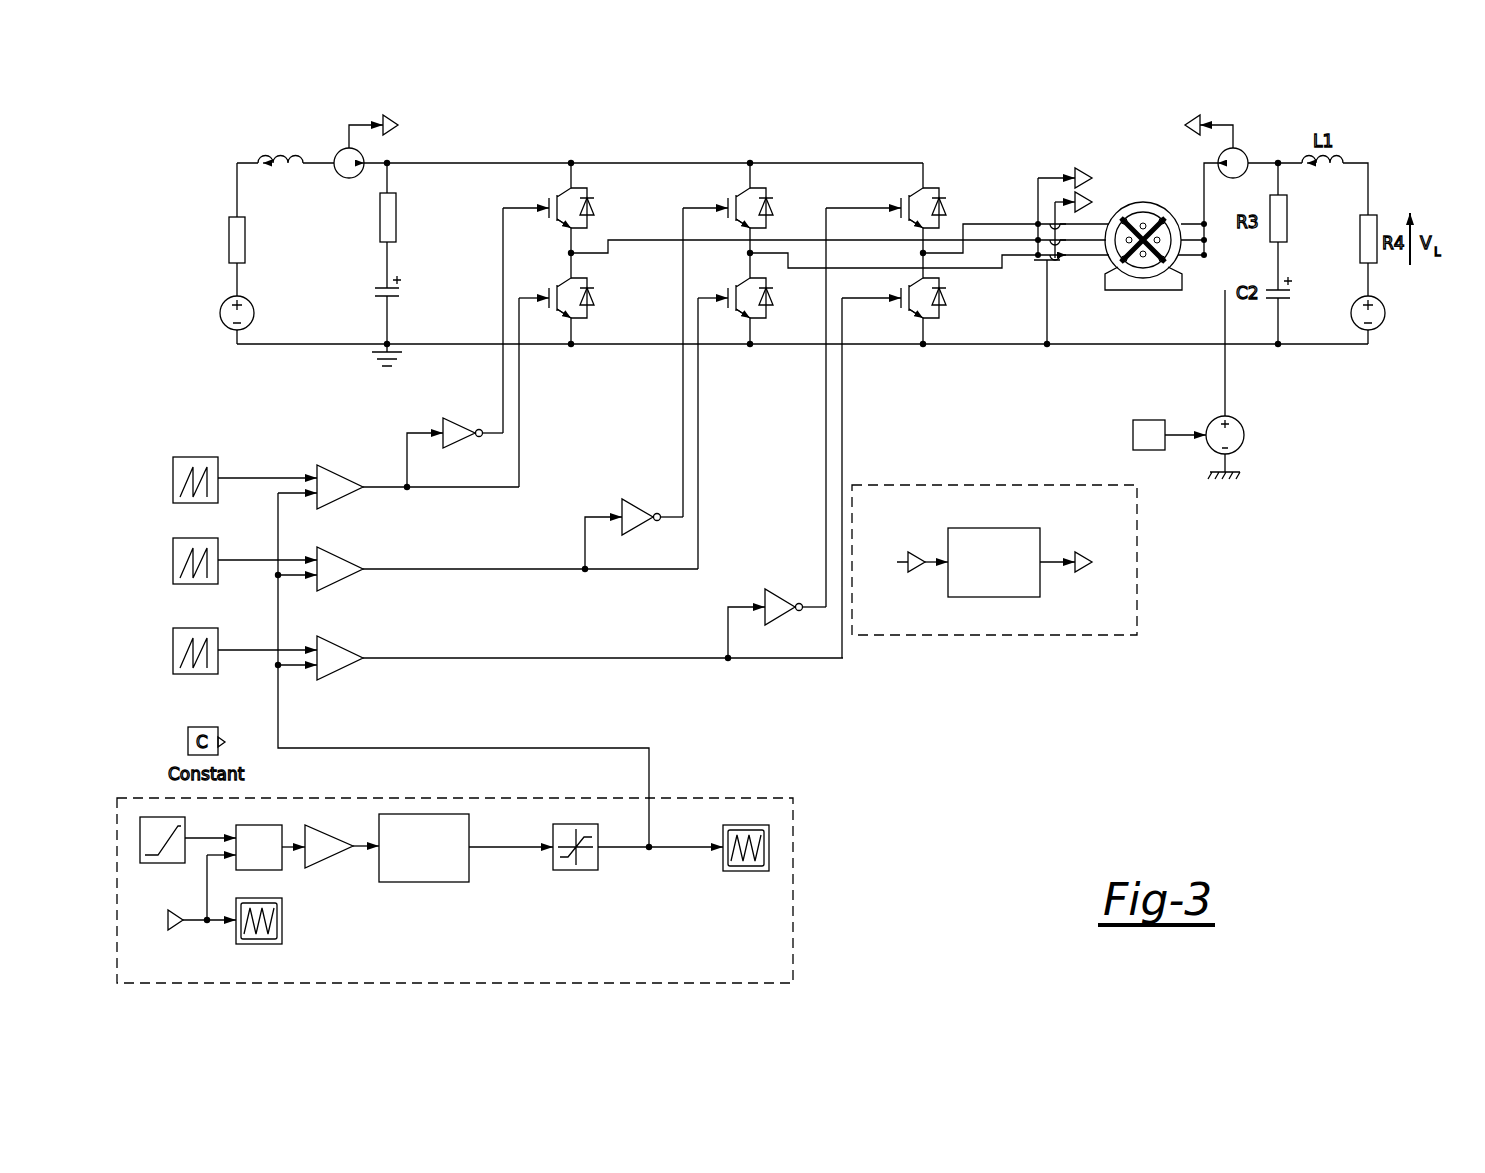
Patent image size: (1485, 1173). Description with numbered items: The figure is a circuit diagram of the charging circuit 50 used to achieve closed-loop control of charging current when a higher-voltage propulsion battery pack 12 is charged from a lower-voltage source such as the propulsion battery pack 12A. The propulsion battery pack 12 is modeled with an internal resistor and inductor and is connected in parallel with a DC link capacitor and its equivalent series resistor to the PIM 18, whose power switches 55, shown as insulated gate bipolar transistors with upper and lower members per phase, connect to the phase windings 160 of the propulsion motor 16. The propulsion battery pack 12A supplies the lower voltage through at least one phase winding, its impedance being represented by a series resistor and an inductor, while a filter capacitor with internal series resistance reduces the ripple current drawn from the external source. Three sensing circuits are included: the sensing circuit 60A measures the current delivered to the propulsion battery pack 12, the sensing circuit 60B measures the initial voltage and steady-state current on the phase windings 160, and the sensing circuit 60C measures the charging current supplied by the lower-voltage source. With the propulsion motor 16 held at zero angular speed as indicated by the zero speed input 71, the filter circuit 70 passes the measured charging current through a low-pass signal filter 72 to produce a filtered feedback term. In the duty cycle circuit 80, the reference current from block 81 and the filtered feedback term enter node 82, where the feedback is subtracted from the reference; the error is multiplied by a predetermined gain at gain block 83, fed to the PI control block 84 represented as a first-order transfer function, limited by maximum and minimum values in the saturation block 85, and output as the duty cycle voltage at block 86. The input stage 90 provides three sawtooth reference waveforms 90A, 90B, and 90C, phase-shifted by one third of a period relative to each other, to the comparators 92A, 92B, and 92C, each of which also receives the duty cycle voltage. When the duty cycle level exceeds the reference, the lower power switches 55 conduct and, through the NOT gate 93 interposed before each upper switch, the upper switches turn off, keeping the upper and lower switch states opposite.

The charging circuit 50 is at (220, 138).
The propulsion battery pack 12 is at (220, 313).
The propulsion battery pack 12A is at (1385, 313).
The sensing circuit 60A is at (432, 108).
The sensing circuit 60B is at (1078, 153).
The sensing circuit 60C is at (1275, 122).
The PIM 18 is at (955, 108).
The power switches 55 is at (940, 135).
The propulsion motor 16 is at (1145, 202).
The phase windings 160 is at (1078, 264).
The zero speed input 71 is at (1150, 420).
The filter circuit 70 is at (995, 636).
The signal filter 72 is at (994, 562).
The input stage 90 is at (159, 455).
The sawtooth reference waveform 90A is at (219, 466).
The sawtooth reference waveform 90B is at (219, 548).
The sawtooth reference waveform 90C is at (219, 638).
The comparator 92A is at (345, 497).
The comparator 92B is at (345, 579).
The comparator 92C is at (345, 668).
The NOT gate 93 is at (458, 423).
The duty cycle circuit 80 is at (793, 897).
The block 81 is at (158, 817).
The node 82 is at (260, 825).
The gain block 83 is at (335, 857).
The PI control block 84 is at (424, 883).
The saturation block 85 is at (573, 871).
The block 86 is at (748, 825).